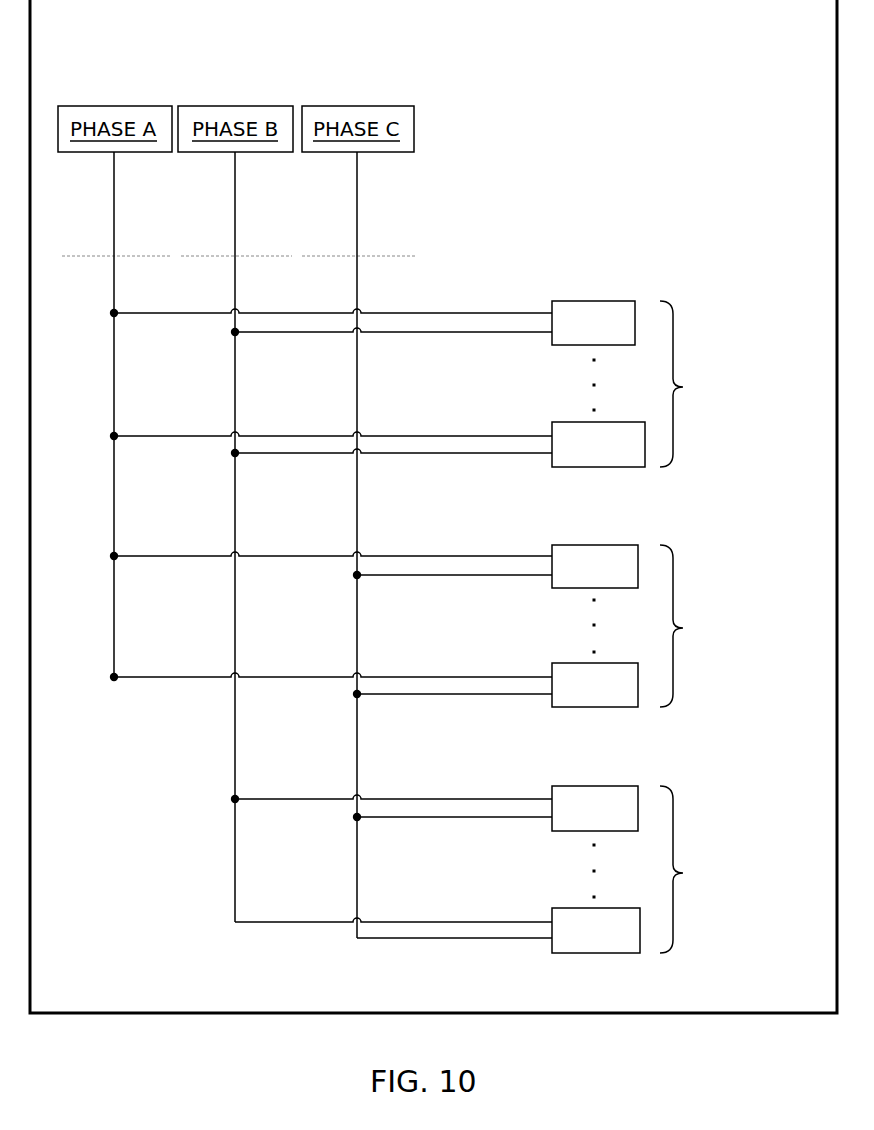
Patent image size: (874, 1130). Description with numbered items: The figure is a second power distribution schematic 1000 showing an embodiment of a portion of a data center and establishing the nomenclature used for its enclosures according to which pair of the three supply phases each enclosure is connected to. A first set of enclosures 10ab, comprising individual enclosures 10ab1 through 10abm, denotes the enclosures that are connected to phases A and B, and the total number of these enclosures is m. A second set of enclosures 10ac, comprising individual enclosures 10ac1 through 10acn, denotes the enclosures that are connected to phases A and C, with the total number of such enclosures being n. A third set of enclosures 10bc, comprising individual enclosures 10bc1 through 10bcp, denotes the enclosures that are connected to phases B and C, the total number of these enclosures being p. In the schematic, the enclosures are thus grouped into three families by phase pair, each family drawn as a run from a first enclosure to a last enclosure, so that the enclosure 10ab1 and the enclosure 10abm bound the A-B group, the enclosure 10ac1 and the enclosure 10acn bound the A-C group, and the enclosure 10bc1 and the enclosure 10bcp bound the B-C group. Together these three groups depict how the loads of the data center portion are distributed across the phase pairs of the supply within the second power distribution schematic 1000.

The second power distribution schematic 1000 is at (810, 43).
The enclosures 10ab is at (662, 384).
The enclosure 10ab1 is at (624, 335).
The enclosure 10abm is at (636, 456).
The enclosures 10ac is at (662, 626).
The enclosure 10ac1 is at (624, 579).
The enclosure 10acn is at (628, 697).
The enclosures 10bc is at (662, 869).
The enclosure 10bc1 is at (624, 820).
The enclosure 10bcp is at (628, 942).